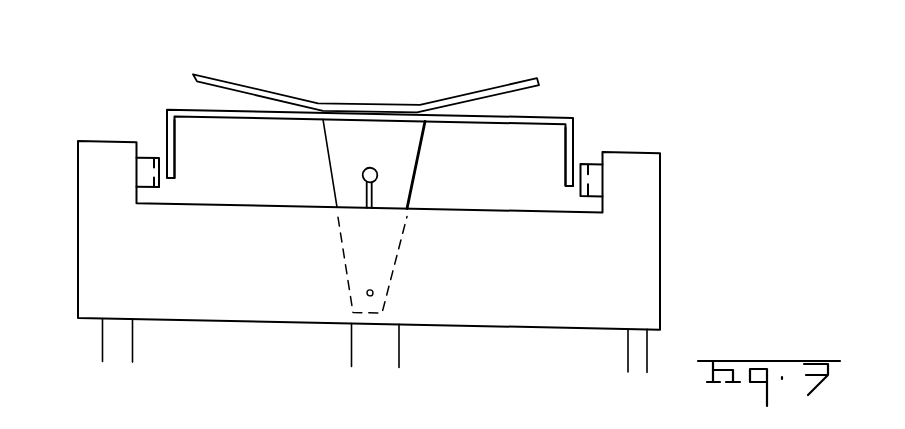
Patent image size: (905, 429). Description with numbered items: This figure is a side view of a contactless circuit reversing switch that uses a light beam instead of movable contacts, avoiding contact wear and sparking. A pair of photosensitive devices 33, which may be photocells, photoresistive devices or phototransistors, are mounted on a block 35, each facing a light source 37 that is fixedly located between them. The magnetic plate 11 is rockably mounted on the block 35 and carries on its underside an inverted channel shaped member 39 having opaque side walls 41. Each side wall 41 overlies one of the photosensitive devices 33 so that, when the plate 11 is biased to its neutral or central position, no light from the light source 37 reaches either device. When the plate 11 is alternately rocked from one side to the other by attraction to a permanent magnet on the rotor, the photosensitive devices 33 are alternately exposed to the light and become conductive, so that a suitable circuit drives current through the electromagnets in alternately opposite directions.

The magnetic plate 11 is at (243, 86).
The photosensitive devices 33 is at (143, 172).
The block 35 is at (509, 282).
The light source 37 is at (363, 174).
The inverted channel shaped member 39 is at (198, 112).
The opaque side walls 41 is at (175, 146).